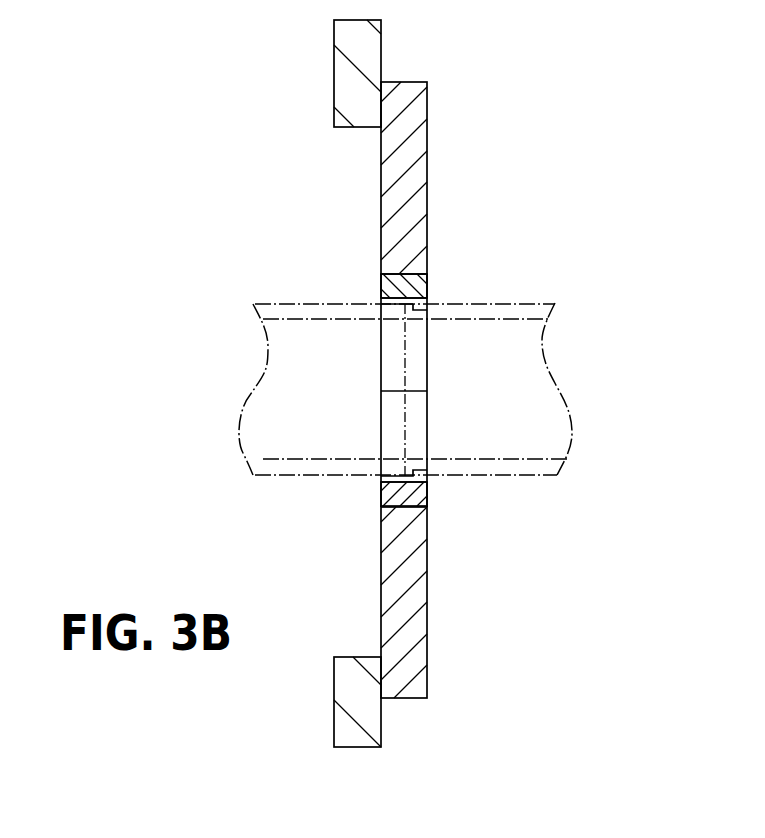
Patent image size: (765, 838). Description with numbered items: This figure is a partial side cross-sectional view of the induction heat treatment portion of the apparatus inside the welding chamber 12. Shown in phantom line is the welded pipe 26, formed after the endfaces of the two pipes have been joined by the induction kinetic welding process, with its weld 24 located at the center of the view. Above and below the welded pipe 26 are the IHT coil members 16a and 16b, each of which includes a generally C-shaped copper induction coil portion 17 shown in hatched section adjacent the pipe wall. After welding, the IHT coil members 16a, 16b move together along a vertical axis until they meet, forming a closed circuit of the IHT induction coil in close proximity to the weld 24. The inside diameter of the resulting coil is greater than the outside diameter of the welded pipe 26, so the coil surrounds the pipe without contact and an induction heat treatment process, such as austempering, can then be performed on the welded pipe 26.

The welding chamber 12 is at (334, 87).
The IHT coil member 16a is at (427, 132).
The IHT coil member 16b is at (428, 578).
The copper induction coil portion 17 is at (420, 312).
The weld 24 is at (409, 455).
The welded pipe 26 is at (517, 298).